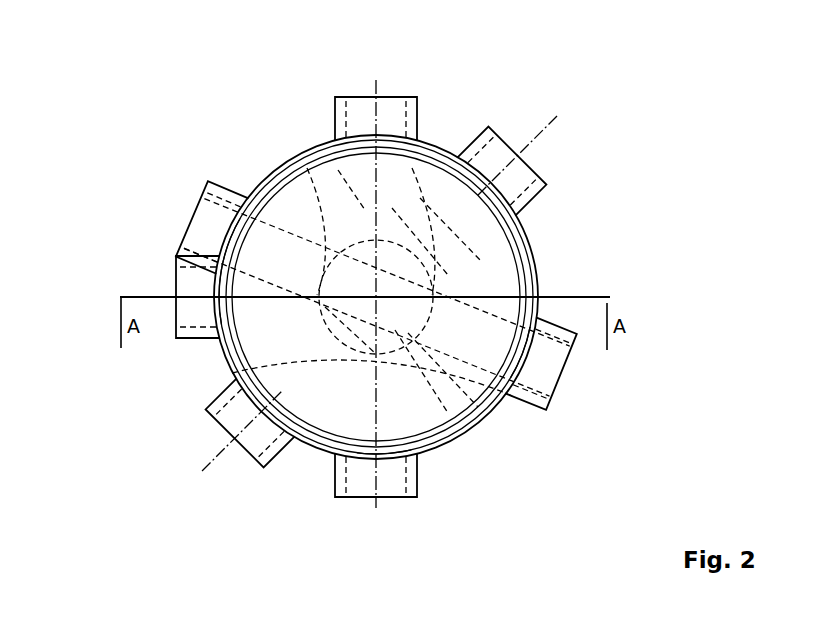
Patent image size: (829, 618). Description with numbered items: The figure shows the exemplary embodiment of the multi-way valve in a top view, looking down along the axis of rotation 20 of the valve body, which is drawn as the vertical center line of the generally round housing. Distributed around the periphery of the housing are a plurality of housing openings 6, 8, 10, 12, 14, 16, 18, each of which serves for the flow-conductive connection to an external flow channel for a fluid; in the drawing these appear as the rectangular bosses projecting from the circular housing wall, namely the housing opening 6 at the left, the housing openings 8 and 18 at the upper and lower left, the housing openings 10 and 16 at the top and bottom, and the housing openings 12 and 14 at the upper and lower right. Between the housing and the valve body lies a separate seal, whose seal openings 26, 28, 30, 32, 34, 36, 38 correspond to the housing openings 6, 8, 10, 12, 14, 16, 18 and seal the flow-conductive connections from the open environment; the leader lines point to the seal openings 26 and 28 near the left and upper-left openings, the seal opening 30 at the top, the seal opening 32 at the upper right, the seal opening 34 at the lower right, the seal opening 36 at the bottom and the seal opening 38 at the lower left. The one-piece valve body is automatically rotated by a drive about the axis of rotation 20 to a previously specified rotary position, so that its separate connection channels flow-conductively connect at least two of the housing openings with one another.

The housing opening 10 is at (373, 90).
The housing opening 8 is at (192, 203).
The seal opening 28 is at (228, 242).
The housing opening 6 is at (172, 272).
The seal opening 26 is at (217, 300).
The housing opening 18 is at (268, 407).
The seal opening 38 is at (213, 423).
The housing opening 16 is at (365, 504).
The seal opening 36 is at (382, 450).
The seal opening 30 is at (380, 143).
The seal opening 32 is at (540, 163).
The housing opening 12 is at (488, 183).
The axis of rotation 20 is at (378, 297).
The seal opening 34 is at (518, 352).
The housing opening 14 is at (565, 387).